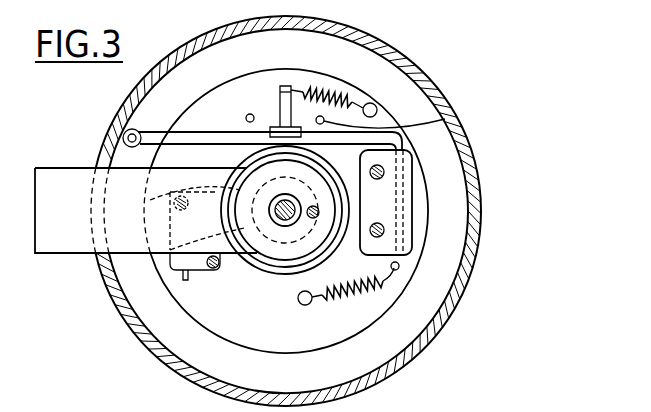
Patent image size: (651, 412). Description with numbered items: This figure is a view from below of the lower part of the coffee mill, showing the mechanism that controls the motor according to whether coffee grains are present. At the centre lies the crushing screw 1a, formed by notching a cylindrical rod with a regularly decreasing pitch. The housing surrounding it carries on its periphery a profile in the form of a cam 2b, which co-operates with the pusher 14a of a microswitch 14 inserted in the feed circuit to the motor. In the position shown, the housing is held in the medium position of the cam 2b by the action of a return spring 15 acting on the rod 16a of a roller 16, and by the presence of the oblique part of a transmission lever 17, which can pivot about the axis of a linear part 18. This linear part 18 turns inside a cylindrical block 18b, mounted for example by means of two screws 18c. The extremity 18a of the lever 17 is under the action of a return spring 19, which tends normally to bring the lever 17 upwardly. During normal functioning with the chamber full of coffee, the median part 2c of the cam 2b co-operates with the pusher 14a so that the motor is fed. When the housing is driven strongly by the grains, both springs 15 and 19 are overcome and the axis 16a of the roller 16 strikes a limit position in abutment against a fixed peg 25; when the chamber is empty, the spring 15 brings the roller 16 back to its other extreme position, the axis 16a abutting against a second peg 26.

The crushing screw 1a is at (143, 330).
The cam profile 2b is at (150, 283).
The median part of the cam 2c is at (240, 190).
The microswitch 14 is at (285, 212).
The pusher 14a is at (162, 258).
The return spring 15 is at (345, 100).
The roller 16 is at (248, 115).
The rod of the roller 16a is at (288, 86).
The transmission lever 17 is at (127, 130).
The linear part 18 is at (414, 234).
The extremity of the lever 18a is at (400, 282).
The cylindrical block 18b is at (412, 196).
The screws 18c is at (400, 170).
The return spring 19 is at (385, 300).
The fixed peg 25 is at (272, 132).
The second peg 26 is at (445, 119).